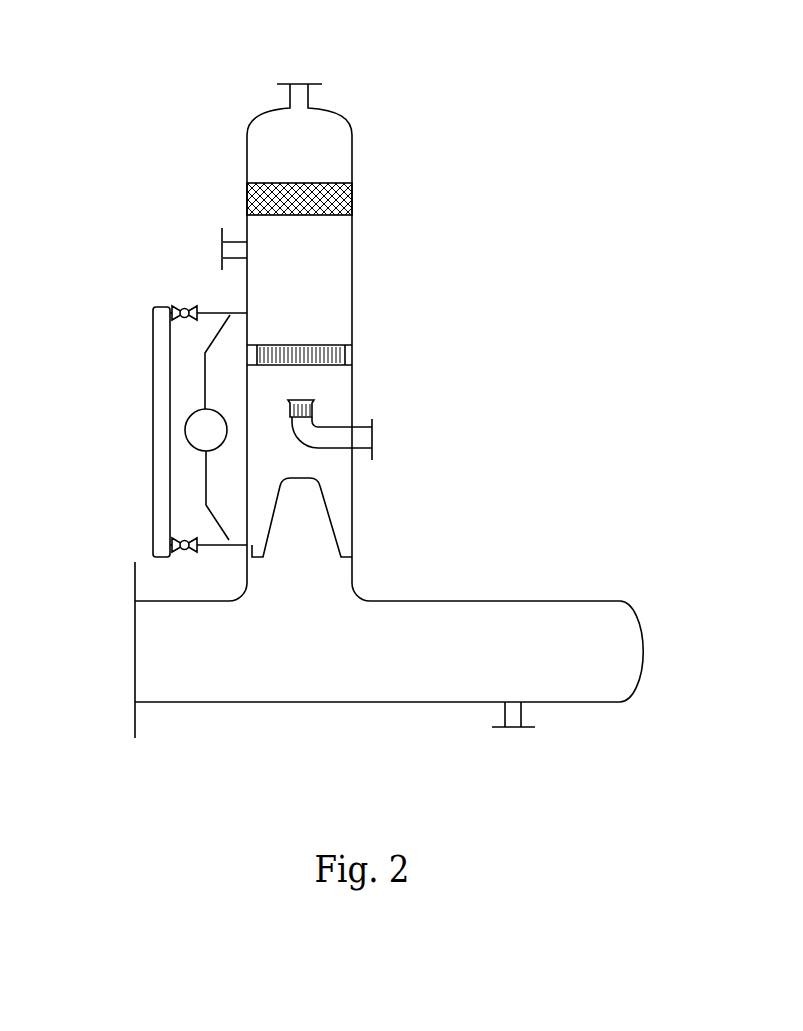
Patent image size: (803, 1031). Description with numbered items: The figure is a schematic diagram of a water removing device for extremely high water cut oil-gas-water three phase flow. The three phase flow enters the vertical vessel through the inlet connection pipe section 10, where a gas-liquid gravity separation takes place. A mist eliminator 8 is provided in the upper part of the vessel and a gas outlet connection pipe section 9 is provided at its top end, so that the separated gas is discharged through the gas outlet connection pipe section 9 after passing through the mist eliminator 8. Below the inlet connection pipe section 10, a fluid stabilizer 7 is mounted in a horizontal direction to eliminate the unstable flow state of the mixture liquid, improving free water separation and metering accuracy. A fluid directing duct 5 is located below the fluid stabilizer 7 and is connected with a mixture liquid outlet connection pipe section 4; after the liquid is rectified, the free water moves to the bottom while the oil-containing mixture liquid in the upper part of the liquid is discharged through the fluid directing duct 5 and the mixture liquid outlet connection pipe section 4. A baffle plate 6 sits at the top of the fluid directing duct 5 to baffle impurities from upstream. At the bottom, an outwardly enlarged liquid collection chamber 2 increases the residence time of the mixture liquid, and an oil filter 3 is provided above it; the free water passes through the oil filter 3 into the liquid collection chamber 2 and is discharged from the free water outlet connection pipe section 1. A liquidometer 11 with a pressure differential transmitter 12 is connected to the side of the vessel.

The free water outlet connection pipe section 1 is at (522, 715).
The liquid collection chamber 2 is at (595, 637).
The oil filter 3 is at (335, 522).
The mixture liquid outlet connection pipe section 4 is at (365, 440).
The fluid directing duct 5 is at (308, 428).
The baffle plate 6 is at (305, 399).
The fluid stabilizer 7 is at (310, 345).
The mist eliminator 8 is at (352, 190).
The gas outlet connection pipe section 9 is at (300, 90).
The inlet connection pipe section 10 is at (218, 250).
The liquidometer 11 is at (152, 357).
The pressure differential transmitter 12 is at (188, 441).